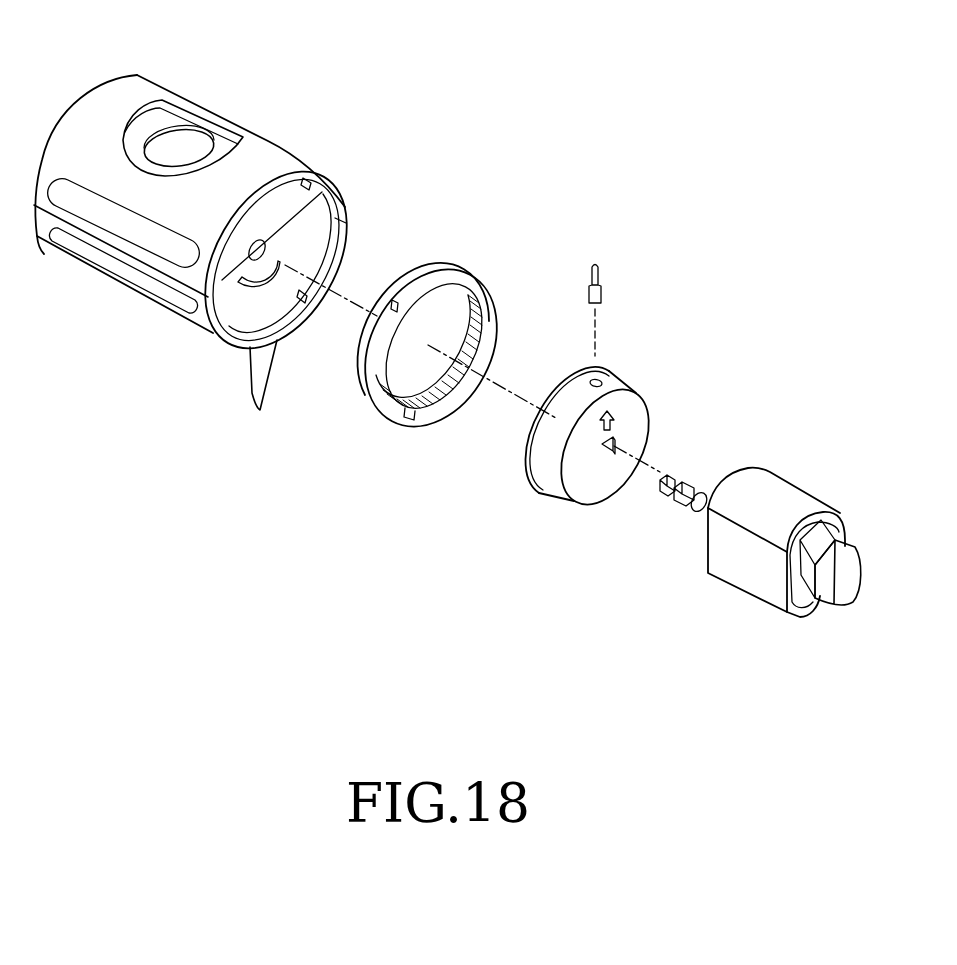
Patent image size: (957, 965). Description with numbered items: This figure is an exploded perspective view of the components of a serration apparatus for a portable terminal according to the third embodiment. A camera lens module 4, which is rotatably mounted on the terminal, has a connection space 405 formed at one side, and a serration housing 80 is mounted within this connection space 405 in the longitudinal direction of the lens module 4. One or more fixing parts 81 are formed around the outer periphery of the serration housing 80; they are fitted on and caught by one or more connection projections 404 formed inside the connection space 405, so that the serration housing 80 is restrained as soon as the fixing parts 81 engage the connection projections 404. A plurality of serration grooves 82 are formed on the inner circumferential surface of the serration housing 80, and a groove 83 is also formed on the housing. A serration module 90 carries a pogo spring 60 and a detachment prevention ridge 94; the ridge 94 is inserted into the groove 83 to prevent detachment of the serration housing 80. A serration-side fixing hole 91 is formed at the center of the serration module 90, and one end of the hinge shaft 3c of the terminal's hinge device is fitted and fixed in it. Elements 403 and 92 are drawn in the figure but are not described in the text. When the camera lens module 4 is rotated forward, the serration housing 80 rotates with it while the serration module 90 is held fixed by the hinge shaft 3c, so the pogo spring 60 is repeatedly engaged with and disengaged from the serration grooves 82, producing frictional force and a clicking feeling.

The camera lens module 4 is at (153, 92).
The guide groove 403 is at (246, 288).
The connection projection 404 is at (264, 394).
The connection space 405 is at (308, 204).
The serration housing 80 is at (446, 311).
The fixing part 81 is at (493, 303).
The serration groove 82 is at (490, 313).
The groove 83 is at (410, 410).
The pogo spring 60 is at (601, 291).
The serration module 90 is at (653, 420).
The serration-side fixing hole 91 is at (616, 443).
The pin hole 92 is at (601, 381).
The detachment prevention ridge 94 is at (540, 478).
The hinge shaft 3c is at (702, 503).